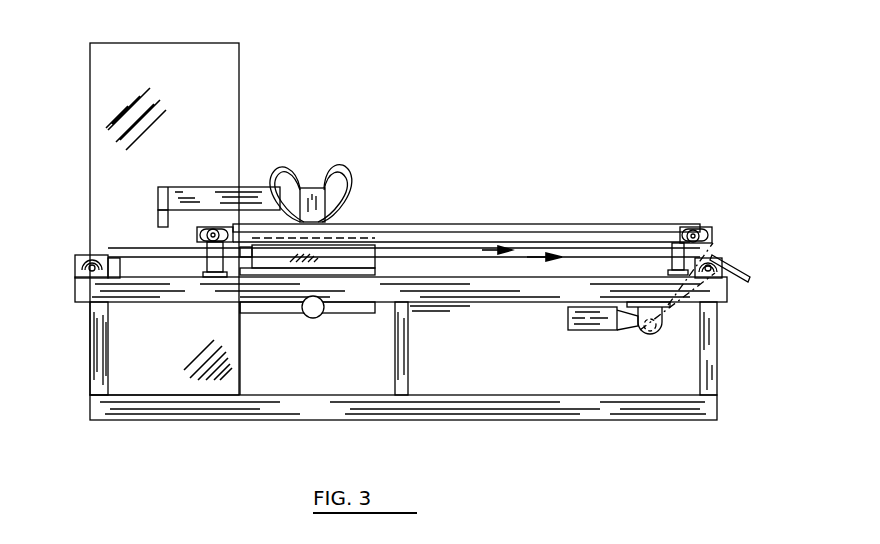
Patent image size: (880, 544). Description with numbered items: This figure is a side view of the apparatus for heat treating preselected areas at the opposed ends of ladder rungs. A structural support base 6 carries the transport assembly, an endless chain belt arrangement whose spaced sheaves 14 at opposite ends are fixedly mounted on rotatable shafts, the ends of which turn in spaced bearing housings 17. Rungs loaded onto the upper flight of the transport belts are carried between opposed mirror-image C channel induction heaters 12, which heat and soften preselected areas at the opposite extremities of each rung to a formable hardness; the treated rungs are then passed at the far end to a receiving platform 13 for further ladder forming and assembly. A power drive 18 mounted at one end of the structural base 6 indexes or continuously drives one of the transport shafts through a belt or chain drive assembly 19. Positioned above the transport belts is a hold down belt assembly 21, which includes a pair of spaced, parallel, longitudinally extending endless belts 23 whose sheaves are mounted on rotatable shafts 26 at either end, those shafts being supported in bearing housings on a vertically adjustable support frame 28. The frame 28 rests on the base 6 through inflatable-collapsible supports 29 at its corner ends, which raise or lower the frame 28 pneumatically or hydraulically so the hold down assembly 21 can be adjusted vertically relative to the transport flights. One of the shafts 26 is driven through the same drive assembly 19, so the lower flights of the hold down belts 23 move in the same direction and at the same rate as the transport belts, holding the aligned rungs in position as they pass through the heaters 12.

The structural support base 6 is at (710, 372).
The C channel induction heater 12 is at (348, 256).
The receiving platform 13 is at (742, 268).
The sheave 14 is at (85, 258).
The bearing housing 17 is at (87, 277).
The power drive 18 is at (592, 318).
The belt drive or chain drive assembly 19 is at (677, 310).
The hold down belt assembly 21 is at (528, 242).
The endless belt 23 is at (430, 247).
The rotatable shaft 26 is at (206, 226).
The vertically adjustable support frame 28 is at (580, 238).
The inflatable-collapsible support 29 is at (208, 265).